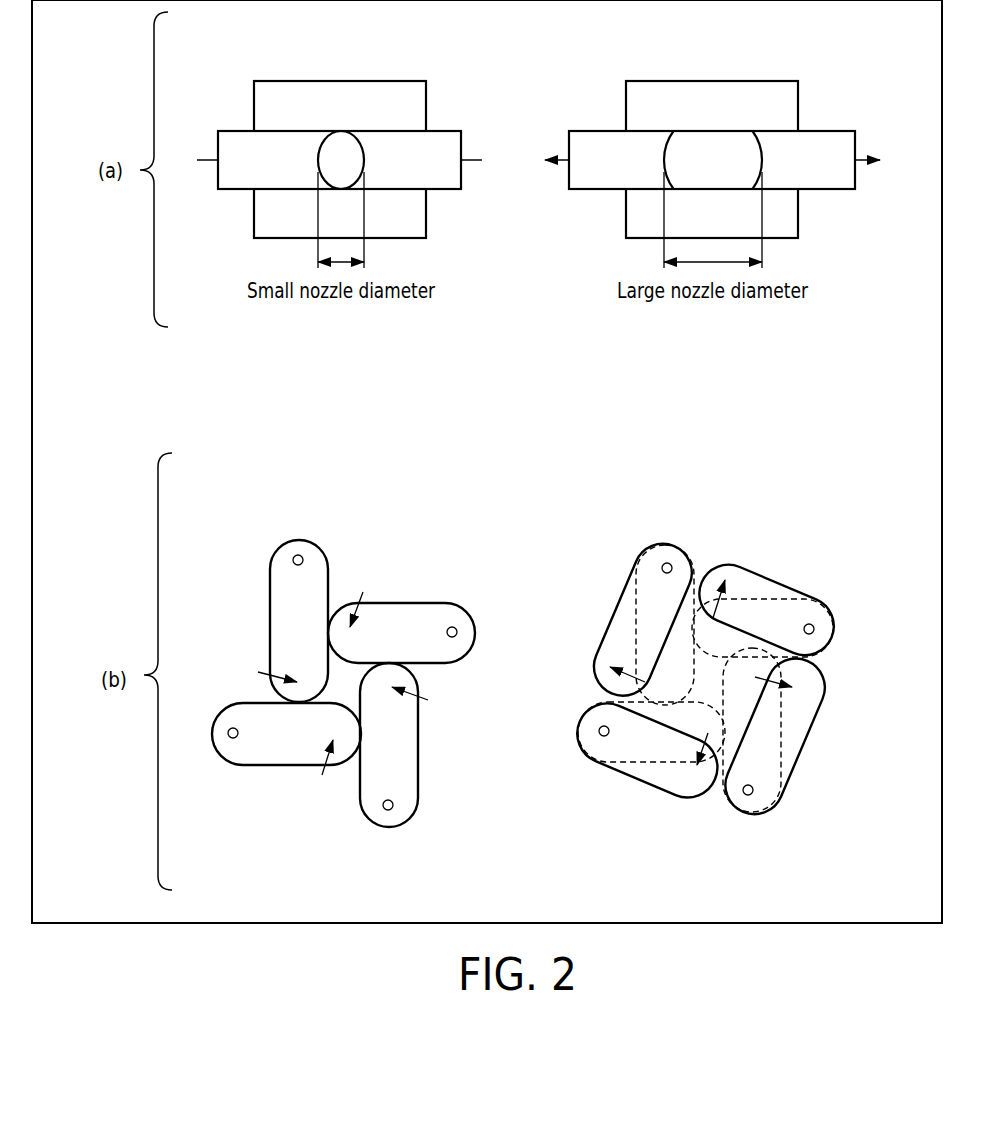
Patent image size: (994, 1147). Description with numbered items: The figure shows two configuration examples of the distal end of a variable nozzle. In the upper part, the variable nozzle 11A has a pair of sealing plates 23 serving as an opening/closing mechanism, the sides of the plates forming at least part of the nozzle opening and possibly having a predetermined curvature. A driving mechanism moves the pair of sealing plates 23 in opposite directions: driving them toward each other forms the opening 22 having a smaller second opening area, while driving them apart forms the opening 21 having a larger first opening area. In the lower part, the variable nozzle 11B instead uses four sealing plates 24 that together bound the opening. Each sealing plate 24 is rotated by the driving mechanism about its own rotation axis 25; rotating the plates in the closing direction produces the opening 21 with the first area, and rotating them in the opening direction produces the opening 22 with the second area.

The variable nozzle 11A is at (409, 81).
The variable nozzle 11B is at (446, 532).
The opening 21 is at (695, 131).
The opening 22 is at (340, 131).
The sealing plate 23 is at (232, 189).
The sealing plate 24 is at (271, 560).
The rotation axis 25 is at (298, 555).